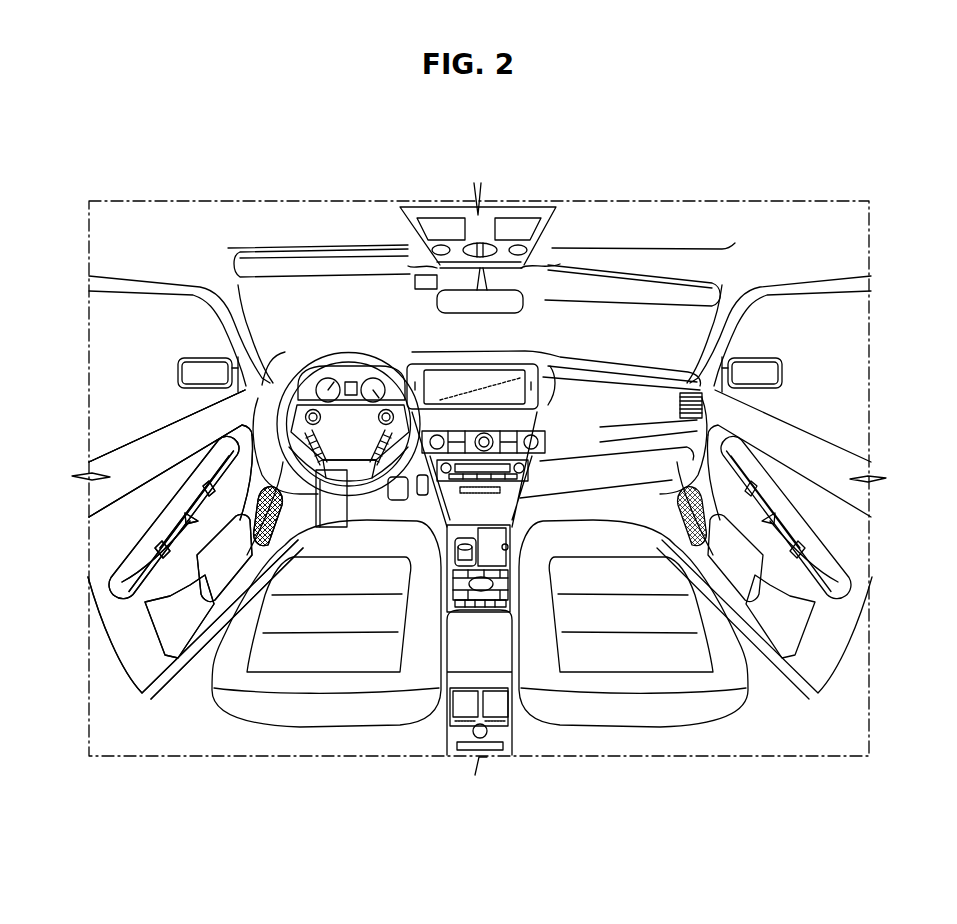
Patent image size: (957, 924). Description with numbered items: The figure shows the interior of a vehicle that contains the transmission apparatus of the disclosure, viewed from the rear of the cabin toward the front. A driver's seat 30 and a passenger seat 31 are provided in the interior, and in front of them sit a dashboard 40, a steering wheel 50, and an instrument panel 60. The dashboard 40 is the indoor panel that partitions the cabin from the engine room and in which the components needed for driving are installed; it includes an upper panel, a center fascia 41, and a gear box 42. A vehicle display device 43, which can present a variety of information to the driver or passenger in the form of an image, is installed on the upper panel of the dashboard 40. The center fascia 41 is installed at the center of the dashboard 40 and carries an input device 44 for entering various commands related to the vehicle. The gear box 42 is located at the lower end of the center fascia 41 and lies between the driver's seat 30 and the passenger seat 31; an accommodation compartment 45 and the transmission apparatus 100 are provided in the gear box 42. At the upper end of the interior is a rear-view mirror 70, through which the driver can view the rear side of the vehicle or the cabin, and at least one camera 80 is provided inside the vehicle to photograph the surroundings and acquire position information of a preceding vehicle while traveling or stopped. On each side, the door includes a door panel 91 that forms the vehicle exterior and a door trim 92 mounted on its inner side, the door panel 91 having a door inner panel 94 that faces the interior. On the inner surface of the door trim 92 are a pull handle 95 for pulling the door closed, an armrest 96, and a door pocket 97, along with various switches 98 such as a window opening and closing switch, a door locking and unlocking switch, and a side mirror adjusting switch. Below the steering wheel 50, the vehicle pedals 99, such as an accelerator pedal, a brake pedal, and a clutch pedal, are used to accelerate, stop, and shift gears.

The driver's seat 30 is at (325, 685).
The passenger seat 31 is at (635, 685).
The dashboard 40 is at (645, 370).
The center fascia 41 is at (528, 469).
The gear box 42 is at (514, 563).
The vehicle display device 43 is at (516, 370).
The input device 44 is at (490, 440).
The accommodation compartment 45 is at (494, 537).
The steering wheel 50 is at (358, 352).
The instrument panel 60 is at (337, 372).
The rear-view mirror 70 is at (522, 302).
The camera 80 is at (432, 283).
The door panel 91 is at (138, 476).
The door trim 92 is at (95, 544).
The door inner panel 94 is at (74, 477).
The pull handle 95 is at (222, 462).
The armrest 96 is at (135, 565).
The door pocket 97 is at (152, 617).
The switches 98 is at (203, 485).
The vehicle pedals 99 is at (398, 505).
The transmission apparatus 100 is at (455, 552).